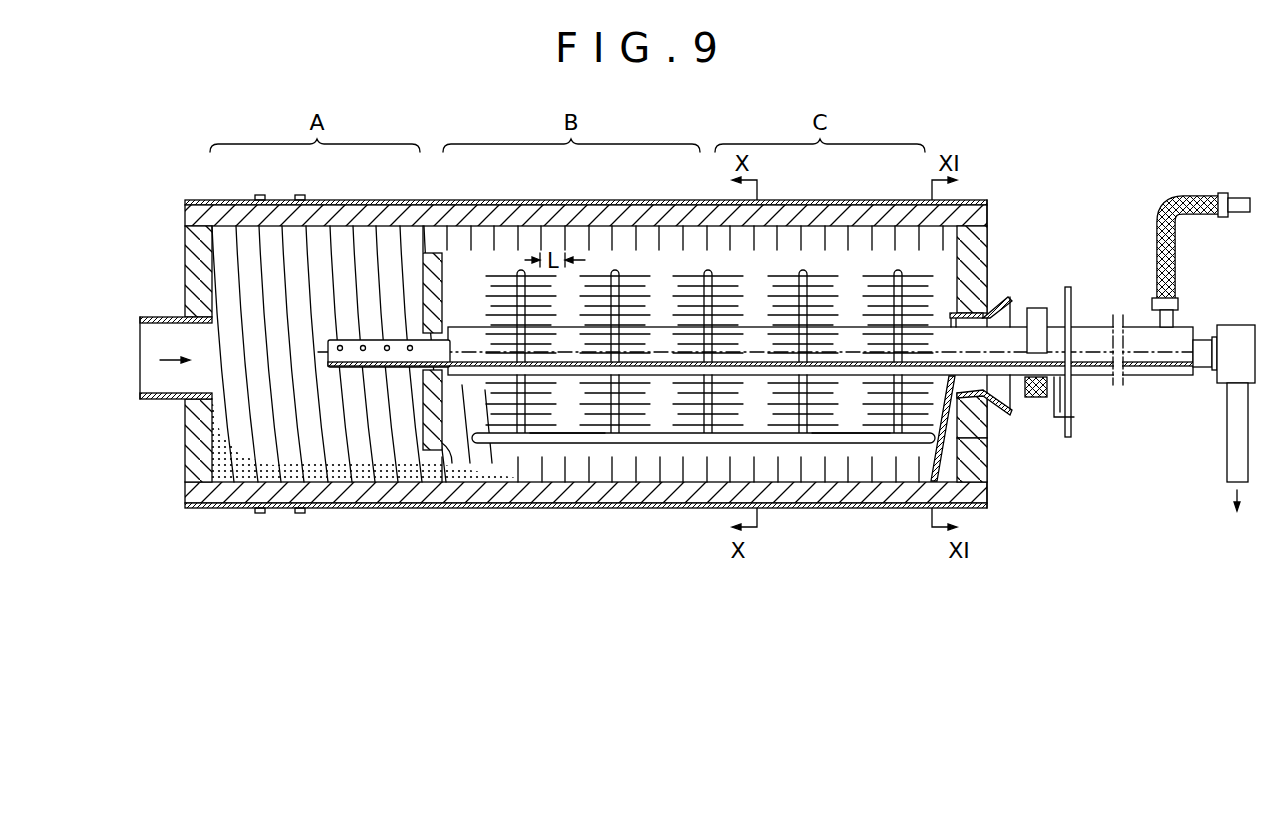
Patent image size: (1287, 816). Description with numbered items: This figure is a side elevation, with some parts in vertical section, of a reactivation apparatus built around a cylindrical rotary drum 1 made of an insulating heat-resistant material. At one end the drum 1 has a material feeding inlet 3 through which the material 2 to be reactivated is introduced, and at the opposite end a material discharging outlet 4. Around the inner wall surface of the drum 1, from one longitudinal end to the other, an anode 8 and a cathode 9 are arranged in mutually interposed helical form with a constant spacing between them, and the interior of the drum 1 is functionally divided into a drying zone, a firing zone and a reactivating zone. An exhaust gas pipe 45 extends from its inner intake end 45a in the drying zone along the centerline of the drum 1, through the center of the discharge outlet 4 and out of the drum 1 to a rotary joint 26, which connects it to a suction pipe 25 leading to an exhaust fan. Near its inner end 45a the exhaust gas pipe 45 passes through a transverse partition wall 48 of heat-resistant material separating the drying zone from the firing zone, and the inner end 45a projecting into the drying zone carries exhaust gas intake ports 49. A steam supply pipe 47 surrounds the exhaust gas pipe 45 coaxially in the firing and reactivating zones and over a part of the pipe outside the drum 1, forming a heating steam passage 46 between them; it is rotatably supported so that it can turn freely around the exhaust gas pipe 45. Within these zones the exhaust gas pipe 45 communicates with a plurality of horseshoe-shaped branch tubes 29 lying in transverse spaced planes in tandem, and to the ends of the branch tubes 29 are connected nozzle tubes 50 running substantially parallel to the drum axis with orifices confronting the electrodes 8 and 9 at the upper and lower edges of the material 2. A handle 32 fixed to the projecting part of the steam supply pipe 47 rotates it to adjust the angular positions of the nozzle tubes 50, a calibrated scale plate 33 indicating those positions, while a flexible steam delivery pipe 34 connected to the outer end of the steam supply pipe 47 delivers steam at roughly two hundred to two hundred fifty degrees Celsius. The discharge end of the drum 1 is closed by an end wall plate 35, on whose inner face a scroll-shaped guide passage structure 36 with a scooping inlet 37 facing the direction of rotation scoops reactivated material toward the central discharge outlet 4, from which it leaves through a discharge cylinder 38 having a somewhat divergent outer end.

The rotary drum 1 is at (593, 493).
The material 2 is at (247, 470).
The material feeding inlet 3 is at (162, 317).
The material discharging outlet 4 is at (977, 315).
The anode 8 is at (662, 240).
The cathode 9 is at (685, 240).
The suction pipe 25 is at (1237, 447).
The rotary joint 26 is at (1232, 325).
The branch tubes 29 is at (615, 270).
The handle 32 is at (1078, 419).
The calibrated scale plate 33 is at (1072, 302).
The flexible steam delivery pipe 34 is at (1183, 196).
The end wall plate 35 is at (973, 242).
The scroll-shaped guide passage structure 36 is at (948, 432).
The scooping inlet 37 is at (948, 467).
The discharge cylinder 38 is at (1003, 320).
The exhaust gas pipe 45 is at (757, 377).
The inner intake end 45a is at (357, 367).
The heating steam passage 46 is at (857, 377).
The steam supply pipe 47 is at (662, 377).
The transverse partition wall 48 is at (452, 462).
The exhaust gas intake ports 49 is at (410, 346).
The nozzle tubes 50 is at (697, 443).